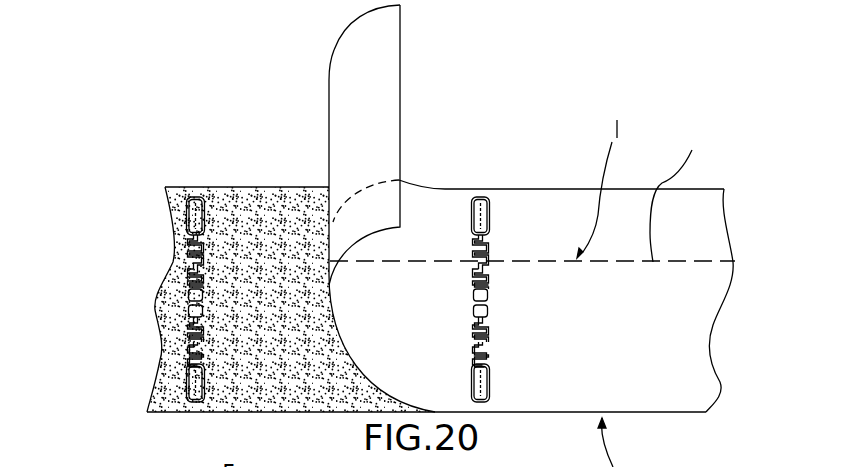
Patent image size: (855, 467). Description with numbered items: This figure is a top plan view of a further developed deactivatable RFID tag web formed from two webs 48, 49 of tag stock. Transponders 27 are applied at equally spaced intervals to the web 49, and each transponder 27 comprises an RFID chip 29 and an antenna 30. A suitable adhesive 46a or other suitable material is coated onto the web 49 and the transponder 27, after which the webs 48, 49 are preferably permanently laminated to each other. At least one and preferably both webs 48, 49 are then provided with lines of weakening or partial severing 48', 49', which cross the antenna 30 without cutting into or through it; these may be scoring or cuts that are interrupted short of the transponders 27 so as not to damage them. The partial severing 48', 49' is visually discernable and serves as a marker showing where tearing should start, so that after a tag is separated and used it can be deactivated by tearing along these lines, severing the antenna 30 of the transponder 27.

The transponder 27 is at (190, 243).
The RFID chip 29 is at (197, 302).
The antenna 30 is at (197, 342).
The adhesive 46a is at (234, 196).
The web 48 is at (552, 296).
The partial severing 48' is at (686, 191).
The web 49 is at (246, 311).
The partial severing 49' is at (291, 263).